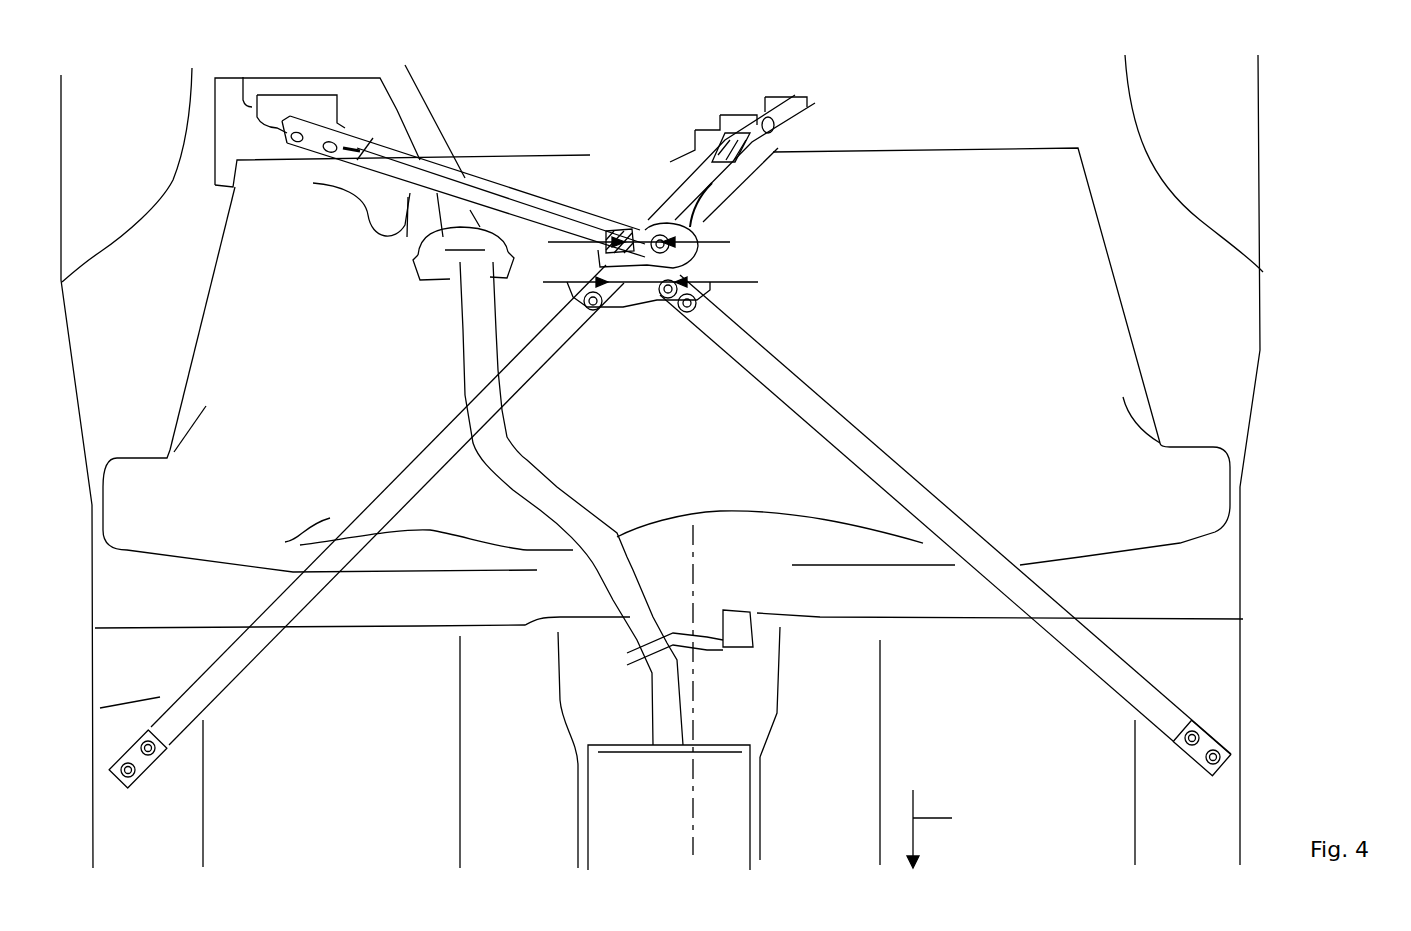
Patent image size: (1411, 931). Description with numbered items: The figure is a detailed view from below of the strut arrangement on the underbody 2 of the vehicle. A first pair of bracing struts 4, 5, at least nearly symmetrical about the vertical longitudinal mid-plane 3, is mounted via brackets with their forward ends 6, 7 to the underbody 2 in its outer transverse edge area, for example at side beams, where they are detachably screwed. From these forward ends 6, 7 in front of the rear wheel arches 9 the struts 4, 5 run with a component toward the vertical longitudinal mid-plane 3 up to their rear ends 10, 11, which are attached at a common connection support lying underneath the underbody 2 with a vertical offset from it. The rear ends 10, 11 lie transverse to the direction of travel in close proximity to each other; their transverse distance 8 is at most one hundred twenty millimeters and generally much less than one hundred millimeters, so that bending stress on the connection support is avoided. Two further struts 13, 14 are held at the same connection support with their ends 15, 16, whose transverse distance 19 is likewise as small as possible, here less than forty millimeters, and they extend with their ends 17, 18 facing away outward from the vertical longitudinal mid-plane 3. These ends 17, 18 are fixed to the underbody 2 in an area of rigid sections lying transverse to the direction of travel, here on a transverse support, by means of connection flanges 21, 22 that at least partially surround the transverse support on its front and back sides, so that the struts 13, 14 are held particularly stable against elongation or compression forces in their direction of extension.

The underbody 2 is at (992, 790).
The vertical longitudinal mid-plane 3 is at (693, 600).
The bracing strut 4 is at (937, 527).
The bracing strut 5 is at (403, 493).
The forward end 6 is at (1183, 733).
The forward end 7 is at (158, 740).
The transverse distance 8 is at (637, 298).
The rear wheel arches 9 is at (96, 130).
The rear end 10 is at (705, 313).
The rear end 11 is at (583, 313).
The further strut 13 is at (712, 183).
The further strut 14 is at (500, 192).
The end 15 is at (679, 243).
The end 16 is at (639, 272).
The end 17 is at (738, 174).
The end 18 is at (367, 137).
The transverse distance 19 is at (655, 237).
The connection flange 21 is at (755, 130).
The connection flange 22 is at (303, 112).